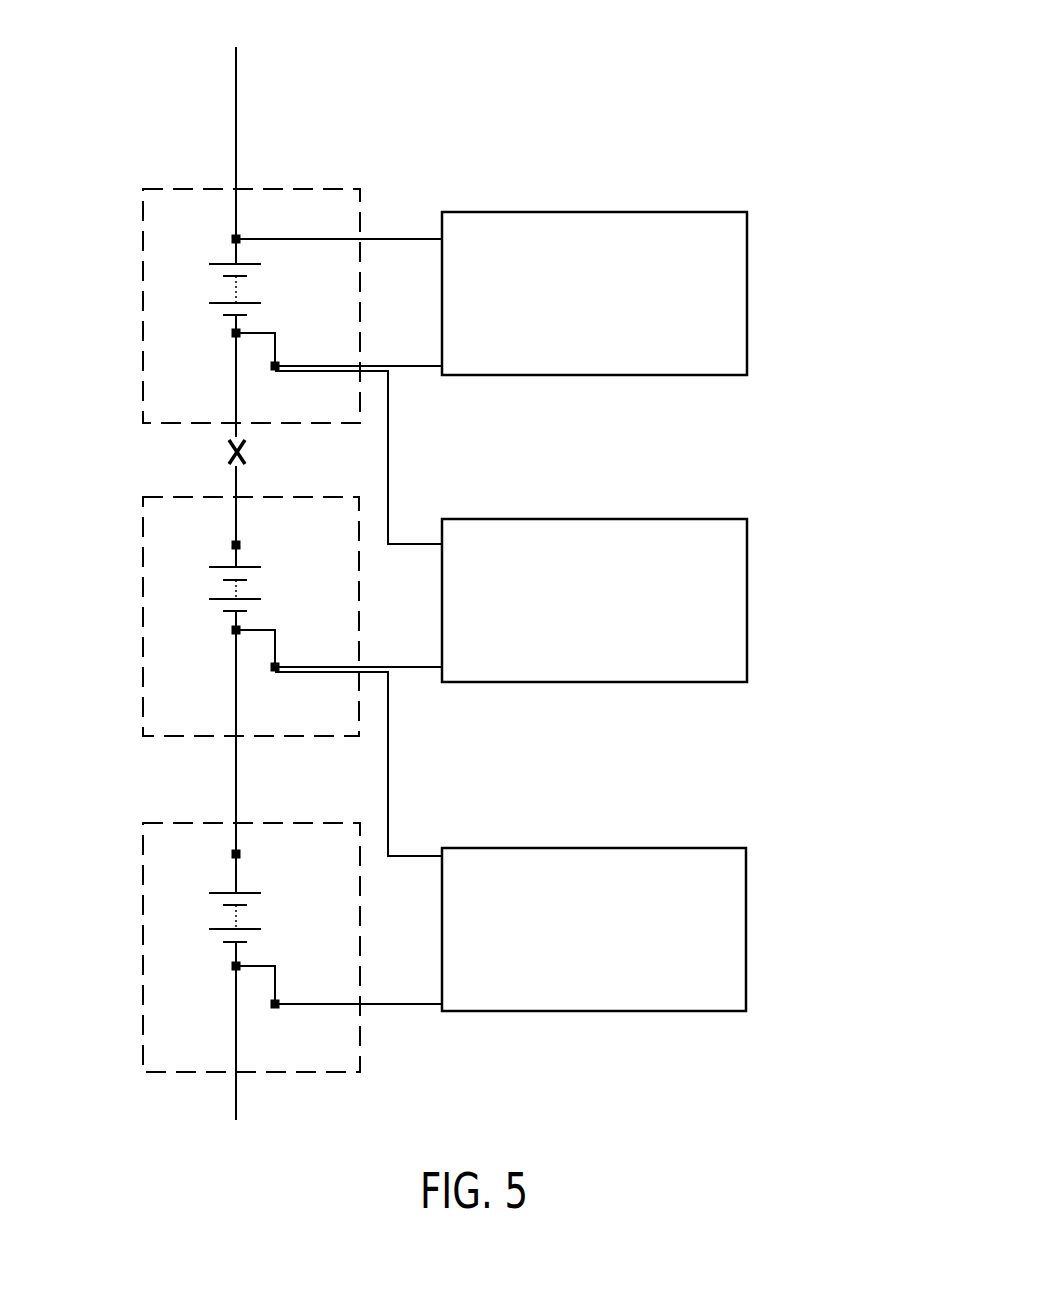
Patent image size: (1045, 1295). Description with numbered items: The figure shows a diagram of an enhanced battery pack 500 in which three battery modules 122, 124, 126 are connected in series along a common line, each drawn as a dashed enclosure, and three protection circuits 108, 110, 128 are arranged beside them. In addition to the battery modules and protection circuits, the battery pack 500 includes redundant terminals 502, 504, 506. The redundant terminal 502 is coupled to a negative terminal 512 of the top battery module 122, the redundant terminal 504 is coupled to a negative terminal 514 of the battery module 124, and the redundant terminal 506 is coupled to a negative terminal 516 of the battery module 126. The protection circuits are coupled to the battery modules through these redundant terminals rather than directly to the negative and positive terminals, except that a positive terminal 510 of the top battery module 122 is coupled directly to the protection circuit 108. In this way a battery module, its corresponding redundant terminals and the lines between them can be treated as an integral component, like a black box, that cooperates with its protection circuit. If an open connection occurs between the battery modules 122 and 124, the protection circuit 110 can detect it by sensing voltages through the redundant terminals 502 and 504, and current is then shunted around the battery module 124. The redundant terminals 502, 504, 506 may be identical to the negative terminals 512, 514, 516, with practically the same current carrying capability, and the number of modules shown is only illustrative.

The enhanced battery pack 500 is at (635, 68).
The battery module 122 is at (175, 188).
The battery module 124 is at (170, 495).
The battery module 126 is at (162, 822).
The protection circuit 108 is at (536, 212).
The protection circuit 110 is at (536, 519).
The protection circuit 128 is at (535, 848).
The positive terminal 510 is at (232, 237).
The negative terminal 512 is at (232, 338).
The redundant terminal 502 is at (276, 372).
The negative terminal 514 is at (232, 635).
The redundant terminal 504 is at (277, 672).
The negative terminal 516 is at (232, 970).
The redundant terminal 506 is at (277, 1010).